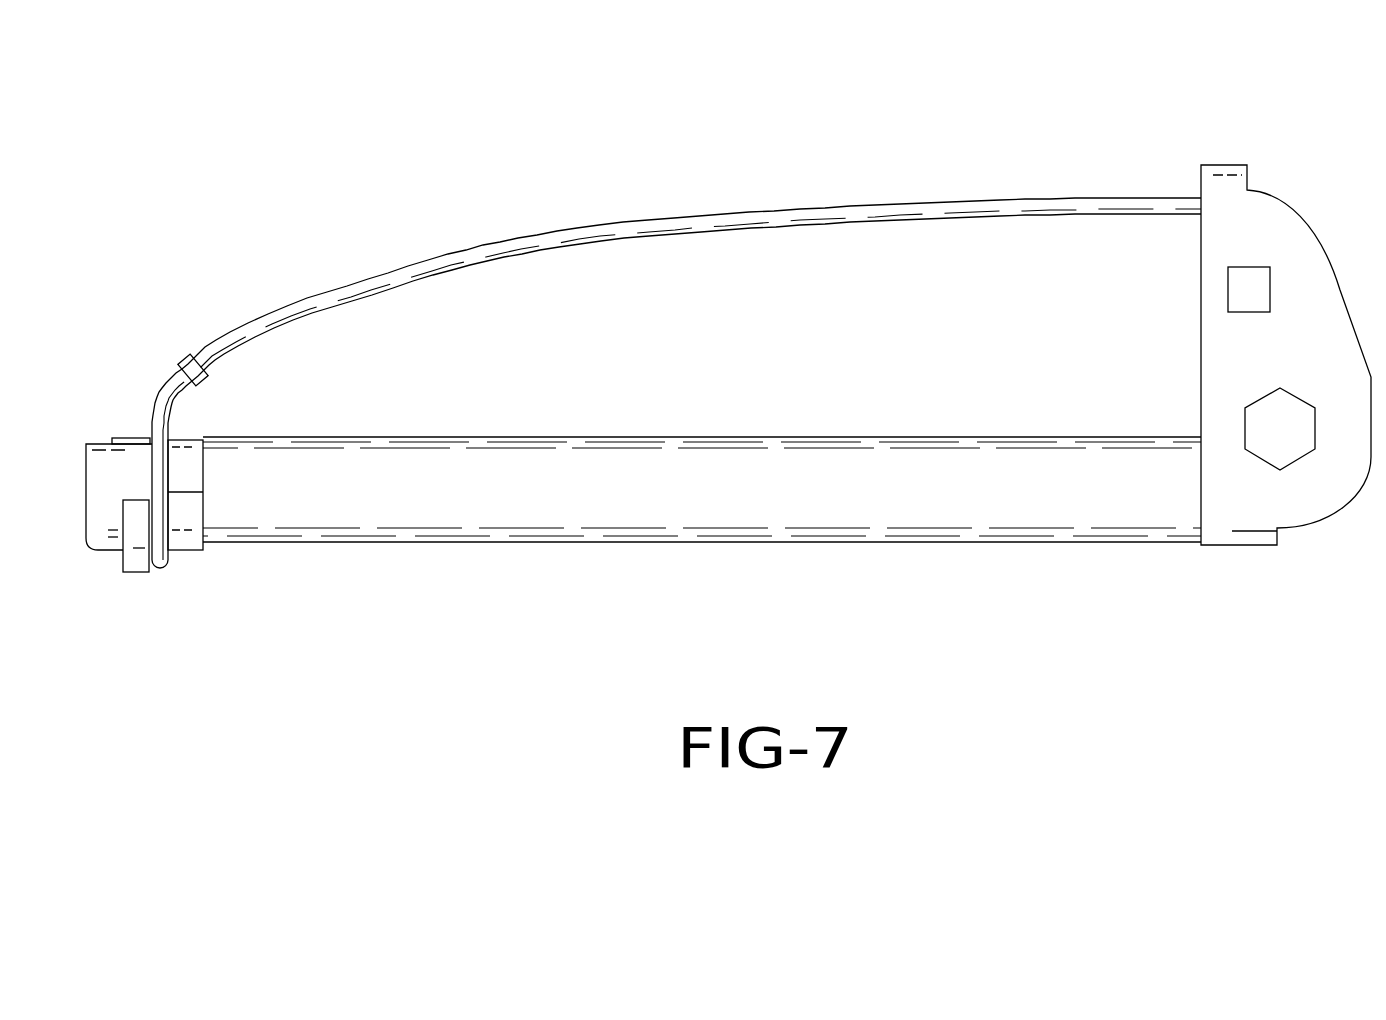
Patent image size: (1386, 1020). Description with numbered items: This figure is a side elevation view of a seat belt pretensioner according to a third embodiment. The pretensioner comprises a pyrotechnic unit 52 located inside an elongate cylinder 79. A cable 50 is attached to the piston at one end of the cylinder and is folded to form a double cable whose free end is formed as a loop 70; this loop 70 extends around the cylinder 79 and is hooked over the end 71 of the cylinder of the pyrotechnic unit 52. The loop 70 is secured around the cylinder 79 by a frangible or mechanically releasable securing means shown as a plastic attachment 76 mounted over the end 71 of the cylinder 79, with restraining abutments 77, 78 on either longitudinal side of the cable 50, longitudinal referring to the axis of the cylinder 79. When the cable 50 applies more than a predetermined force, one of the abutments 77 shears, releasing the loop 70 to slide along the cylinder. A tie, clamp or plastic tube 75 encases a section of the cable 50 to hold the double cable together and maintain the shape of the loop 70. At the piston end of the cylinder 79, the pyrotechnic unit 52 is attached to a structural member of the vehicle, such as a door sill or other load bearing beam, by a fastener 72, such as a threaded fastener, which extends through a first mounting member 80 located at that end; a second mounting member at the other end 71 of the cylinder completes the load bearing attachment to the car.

The cable 50 is at (674, 358).
The pyrotechnic unit 52 is at (702, 549).
The loop 70 is at (155, 566).
The end of the cylinder 71 is at (125, 438).
The fastener 72 is at (1297, 443).
The plastic tube 75 is at (185, 365).
The plastic attachment 76 is at (118, 485).
The restraining abutment 77 is at (190, 470).
The restraining abutment 78 is at (127, 555).
The cylinder 79 is at (572, 542).
The first mounting member 80 is at (1286, 386).